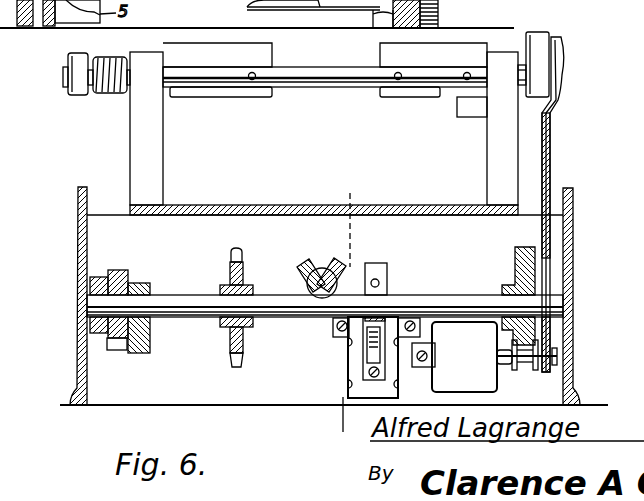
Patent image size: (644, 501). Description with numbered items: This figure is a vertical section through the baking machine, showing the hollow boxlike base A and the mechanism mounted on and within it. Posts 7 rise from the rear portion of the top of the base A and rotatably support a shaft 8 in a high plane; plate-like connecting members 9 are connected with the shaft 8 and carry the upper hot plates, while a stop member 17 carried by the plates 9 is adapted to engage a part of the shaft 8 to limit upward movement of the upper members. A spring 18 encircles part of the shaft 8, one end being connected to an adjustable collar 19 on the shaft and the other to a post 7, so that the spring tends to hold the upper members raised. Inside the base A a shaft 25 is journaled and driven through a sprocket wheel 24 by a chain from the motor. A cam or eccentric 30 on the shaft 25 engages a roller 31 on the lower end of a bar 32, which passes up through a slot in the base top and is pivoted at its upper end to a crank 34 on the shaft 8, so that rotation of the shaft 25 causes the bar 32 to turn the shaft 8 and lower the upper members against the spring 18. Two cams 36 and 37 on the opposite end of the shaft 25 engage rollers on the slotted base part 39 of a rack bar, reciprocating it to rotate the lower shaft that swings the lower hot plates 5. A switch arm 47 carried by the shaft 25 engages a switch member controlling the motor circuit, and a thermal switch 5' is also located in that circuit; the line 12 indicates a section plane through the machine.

The post 7 is at (142, 145).
The boxlike base A is at (578, 219).
The plate-like connecting member 9 is at (380, 53).
The shaft 8 is at (318, 84).
The stop member 17 is at (464, 107).
The collar 19 is at (78, 96).
The spring 18 is at (108, 94).
The crank 34 is at (541, 42).
The bar 32 is at (549, 159).
The shaft 25 is at (182, 306).
The cam 36 is at (98, 277).
The slotted base part 39 is at (123, 273).
The cam 37 is at (149, 288).
The sprocket wheel 24 is at (245, 273).
The switch arm 47 is at (380, 271).
The cam or eccentric 30 is at (515, 265).
The section line 12 is at (365, 193).
The hot plate 5 is at (356, 357).
The holder 5' is at (454, 357).
The roller 31 is at (525, 370).